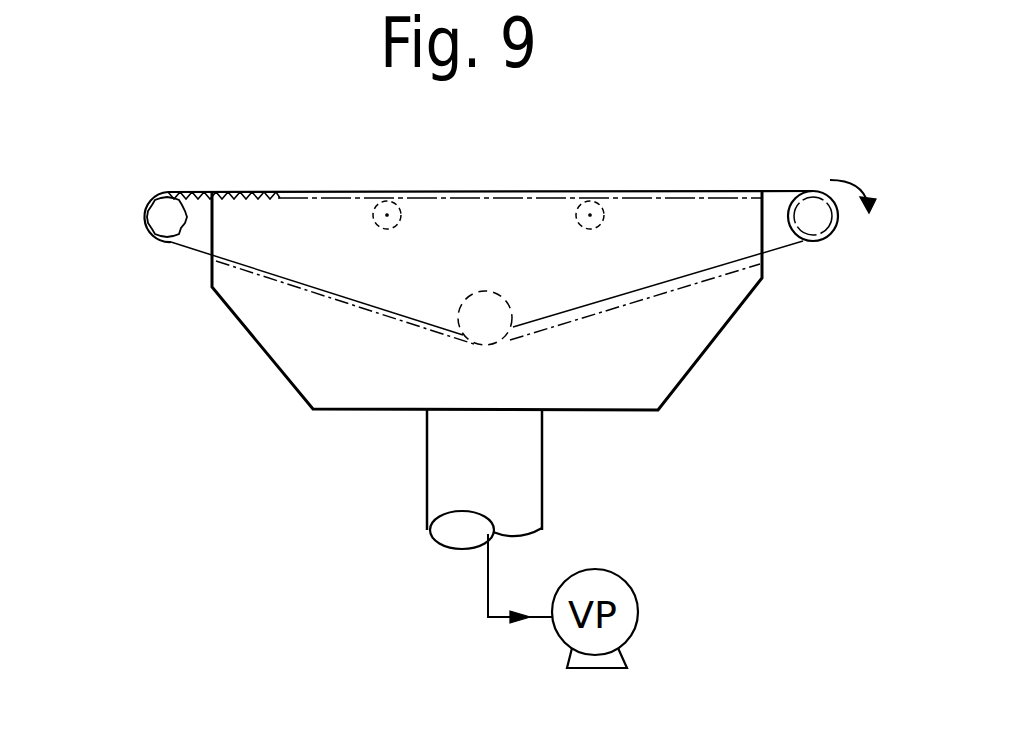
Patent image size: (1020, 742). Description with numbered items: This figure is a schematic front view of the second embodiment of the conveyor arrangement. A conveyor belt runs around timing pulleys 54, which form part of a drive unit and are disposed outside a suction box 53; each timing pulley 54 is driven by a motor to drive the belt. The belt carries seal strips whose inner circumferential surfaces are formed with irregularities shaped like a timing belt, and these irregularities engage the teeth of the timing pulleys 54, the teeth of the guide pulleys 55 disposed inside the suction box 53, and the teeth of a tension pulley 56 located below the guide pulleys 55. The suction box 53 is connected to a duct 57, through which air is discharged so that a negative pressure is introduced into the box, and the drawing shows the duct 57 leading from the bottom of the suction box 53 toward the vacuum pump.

The suction box 53 is at (707, 352).
The timing pulley 54 is at (150, 232).
The guide pulley 55 is at (402, 213).
The tension pulley 56 is at (497, 343).
The duct 57 is at (423, 487).